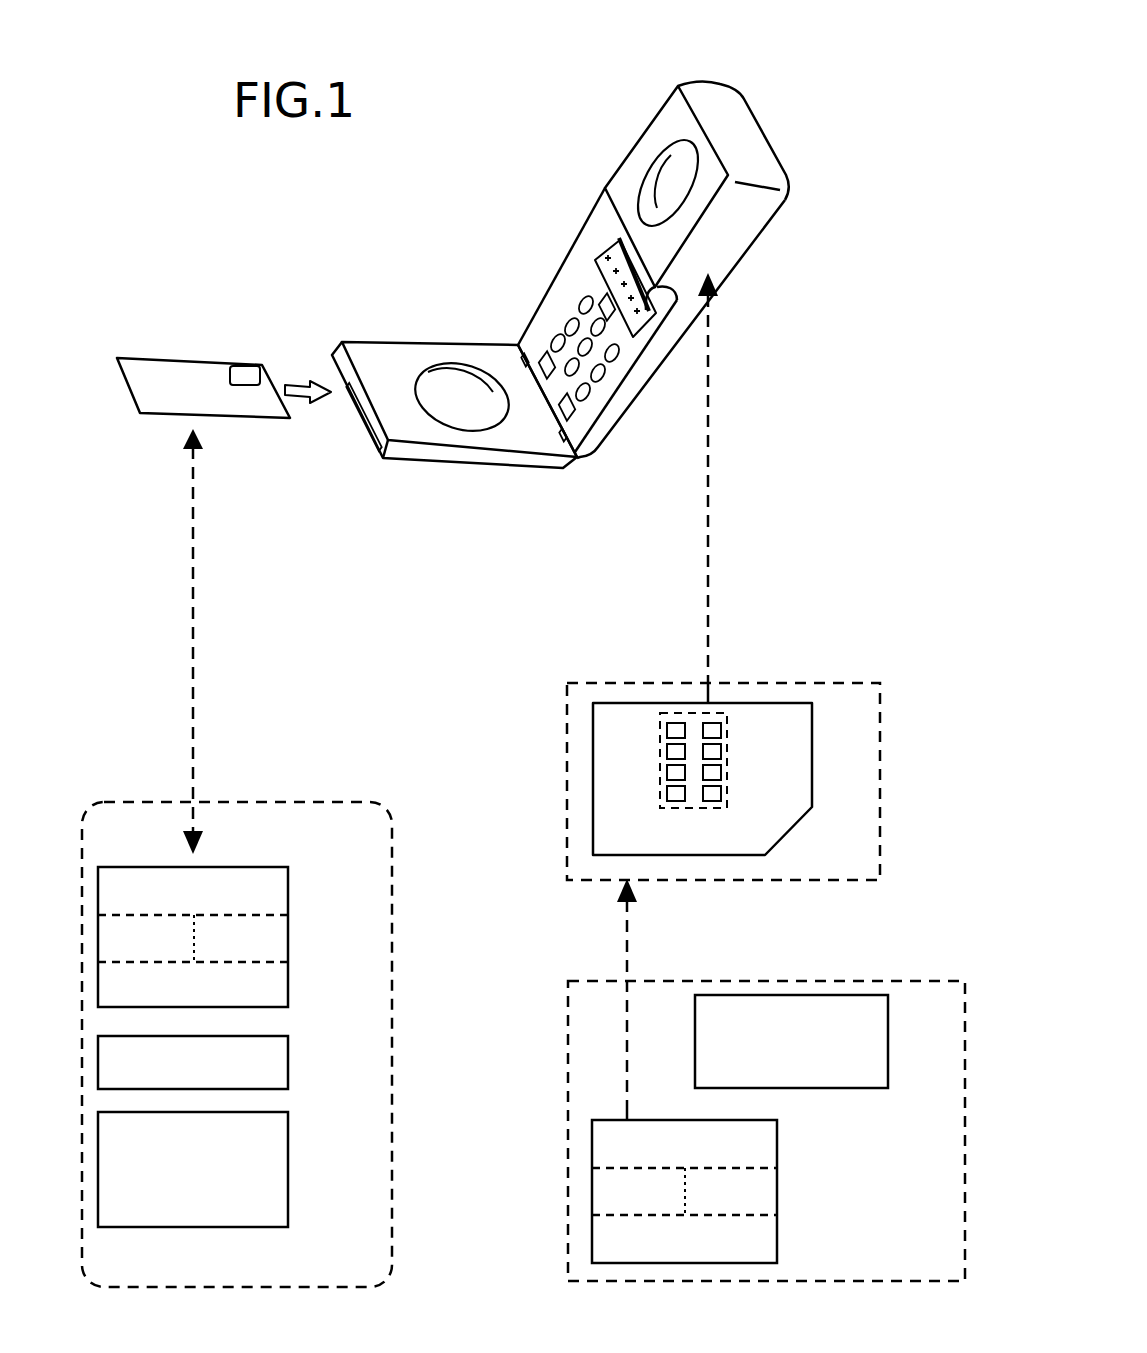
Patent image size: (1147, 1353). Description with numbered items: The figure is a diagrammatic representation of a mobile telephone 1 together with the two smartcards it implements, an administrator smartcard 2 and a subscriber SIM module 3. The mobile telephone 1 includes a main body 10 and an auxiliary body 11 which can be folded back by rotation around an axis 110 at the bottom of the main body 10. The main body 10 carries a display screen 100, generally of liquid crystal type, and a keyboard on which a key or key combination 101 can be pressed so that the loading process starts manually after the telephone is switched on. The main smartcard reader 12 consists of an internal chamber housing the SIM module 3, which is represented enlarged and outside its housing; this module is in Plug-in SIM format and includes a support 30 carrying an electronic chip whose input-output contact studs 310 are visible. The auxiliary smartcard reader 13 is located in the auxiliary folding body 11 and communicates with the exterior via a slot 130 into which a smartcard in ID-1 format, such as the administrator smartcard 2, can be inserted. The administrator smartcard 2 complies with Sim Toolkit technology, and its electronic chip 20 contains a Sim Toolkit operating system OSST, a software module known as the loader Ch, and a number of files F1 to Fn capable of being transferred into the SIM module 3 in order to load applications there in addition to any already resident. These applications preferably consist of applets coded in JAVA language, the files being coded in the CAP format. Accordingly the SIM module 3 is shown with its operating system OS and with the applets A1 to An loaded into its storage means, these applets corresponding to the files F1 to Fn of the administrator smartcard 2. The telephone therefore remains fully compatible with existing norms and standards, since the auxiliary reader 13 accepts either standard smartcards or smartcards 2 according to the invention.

The mobile telephone 1 is at (712, 100).
The smartcard 2 is at (163, 370).
The electronic chip 20 is at (246, 377).
The SIM module 3 is at (806, 823).
The support 30 is at (728, 785).
The input-output contact studs 310 is at (708, 752).
The main body 10 is at (547, 303).
The auxiliary body 11 is at (398, 358).
The main smartcard reader 12 is at (733, 230).
The auxiliary smartcard reader 13 is at (440, 455).
The display screen 100 is at (606, 258).
The key or key combination 101 is at (555, 340).
The axis 110 is at (567, 437).
The slot 130 is at (354, 401).
The file F1 is at (271, 897).
The file Fn is at (271, 991).
The loader Ch is at (271, 1064).
The Sim Toolkit operating system OSST is at (271, 1185).
The operating system OS is at (870, 1055).
The applet A1 is at (757, 1148).
The applet An is at (757, 1243).